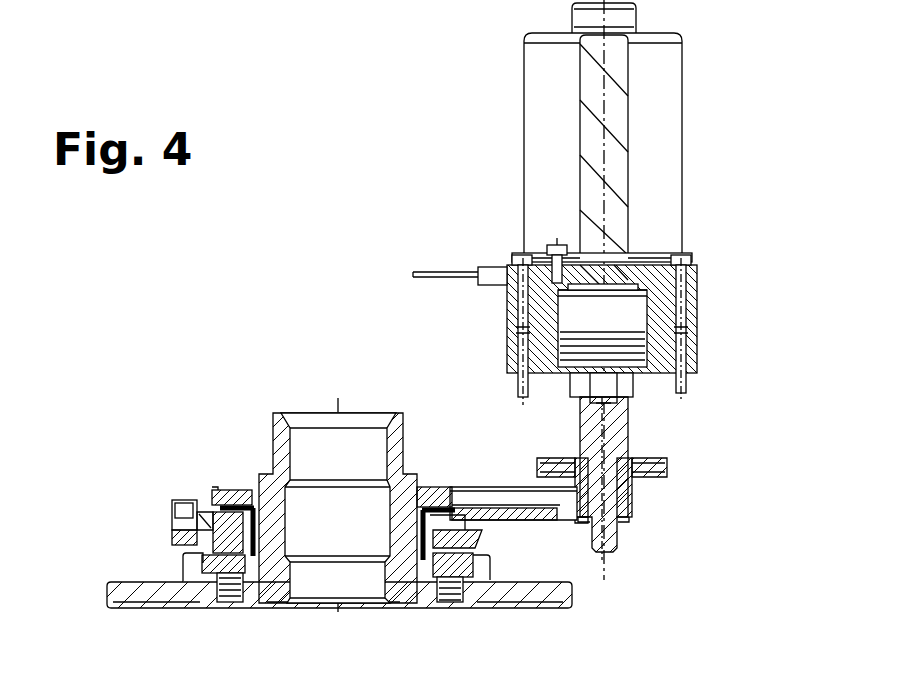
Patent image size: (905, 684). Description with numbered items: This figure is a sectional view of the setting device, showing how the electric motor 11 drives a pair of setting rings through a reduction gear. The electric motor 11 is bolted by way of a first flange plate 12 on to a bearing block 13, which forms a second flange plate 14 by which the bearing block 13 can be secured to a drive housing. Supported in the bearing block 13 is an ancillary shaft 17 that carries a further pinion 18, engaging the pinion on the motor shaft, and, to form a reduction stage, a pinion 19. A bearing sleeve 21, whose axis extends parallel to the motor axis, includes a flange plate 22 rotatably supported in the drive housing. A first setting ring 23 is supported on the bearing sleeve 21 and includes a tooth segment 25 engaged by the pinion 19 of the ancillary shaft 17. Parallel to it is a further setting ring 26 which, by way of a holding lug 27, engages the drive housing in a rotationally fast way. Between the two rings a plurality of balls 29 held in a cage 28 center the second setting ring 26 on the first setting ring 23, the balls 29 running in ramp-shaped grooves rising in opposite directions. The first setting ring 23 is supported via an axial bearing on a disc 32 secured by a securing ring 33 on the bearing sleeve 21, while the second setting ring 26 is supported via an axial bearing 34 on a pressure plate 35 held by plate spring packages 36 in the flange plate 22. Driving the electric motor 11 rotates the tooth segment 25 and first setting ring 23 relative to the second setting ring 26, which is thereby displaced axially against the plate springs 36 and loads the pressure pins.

The electric motor 11 is at (667, 148).
The first flange plate 12 is at (663, 253).
The bearing block 13 is at (690, 333).
The second flange plate 14 is at (653, 373).
The ancillary shaft 17 is at (610, 432).
The further pinion 18 is at (667, 470).
The pinion 19 is at (632, 503).
The bearing sleeve 21 is at (283, 443).
The flange plate 22 is at (125, 595).
The first setting ring 23 is at (208, 498).
The tooth segment 25 is at (567, 517).
The further setting ring 26 is at (185, 565).
The holding lug 27 is at (172, 510).
The cage 28 is at (172, 533).
The balls 29 is at (487, 487).
The disc 32 is at (453, 487).
The securing ring 33 is at (430, 480).
The axial bearing 34 is at (477, 540).
The pressure plate 35 is at (473, 567).
The plate spring packages 36 is at (428, 592).